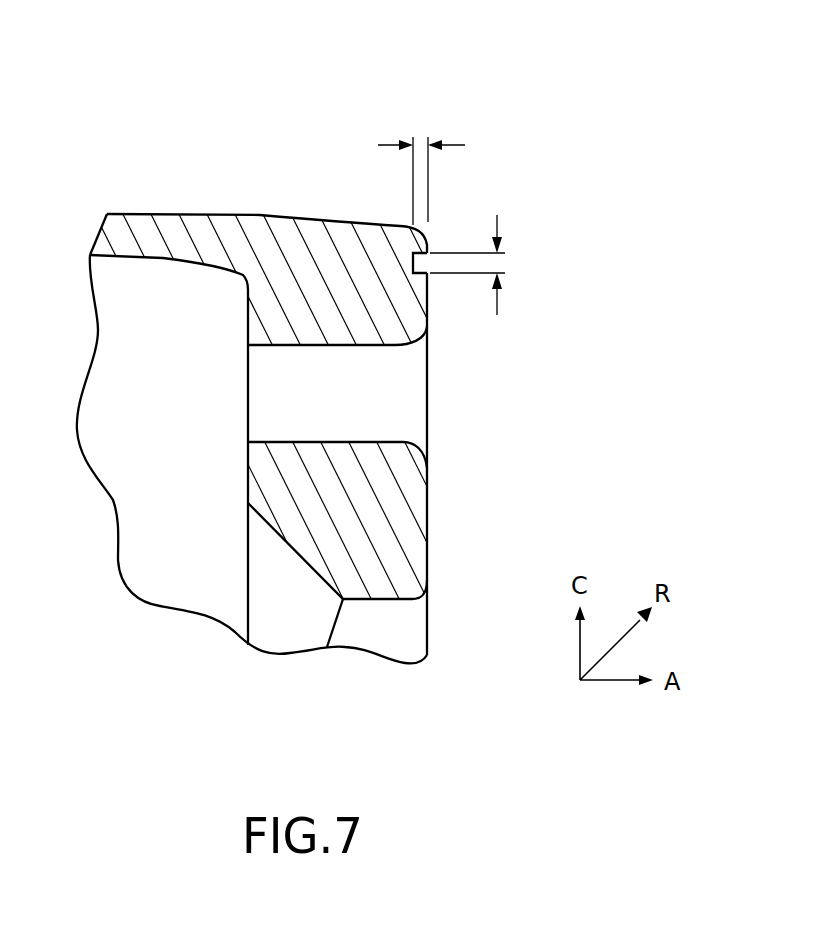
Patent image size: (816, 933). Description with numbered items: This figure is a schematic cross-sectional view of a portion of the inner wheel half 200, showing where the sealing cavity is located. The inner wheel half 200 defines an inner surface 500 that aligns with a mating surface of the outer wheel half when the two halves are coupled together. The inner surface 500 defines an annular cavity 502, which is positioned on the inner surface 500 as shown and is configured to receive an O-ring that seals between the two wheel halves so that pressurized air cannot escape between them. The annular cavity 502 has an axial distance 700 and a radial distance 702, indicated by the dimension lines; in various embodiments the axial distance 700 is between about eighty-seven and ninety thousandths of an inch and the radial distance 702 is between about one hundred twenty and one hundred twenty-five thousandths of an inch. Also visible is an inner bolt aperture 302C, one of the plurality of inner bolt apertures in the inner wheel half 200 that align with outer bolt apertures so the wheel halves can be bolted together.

The inner wheel half 200 is at (137, 99).
The inner bolt aperture 302C is at (283, 401).
The inner surface 500 is at (428, 512).
The annular cavity 502 is at (413, 276).
The axial distance 700 is at (383, 145).
The radial distance 702 is at (499, 222).